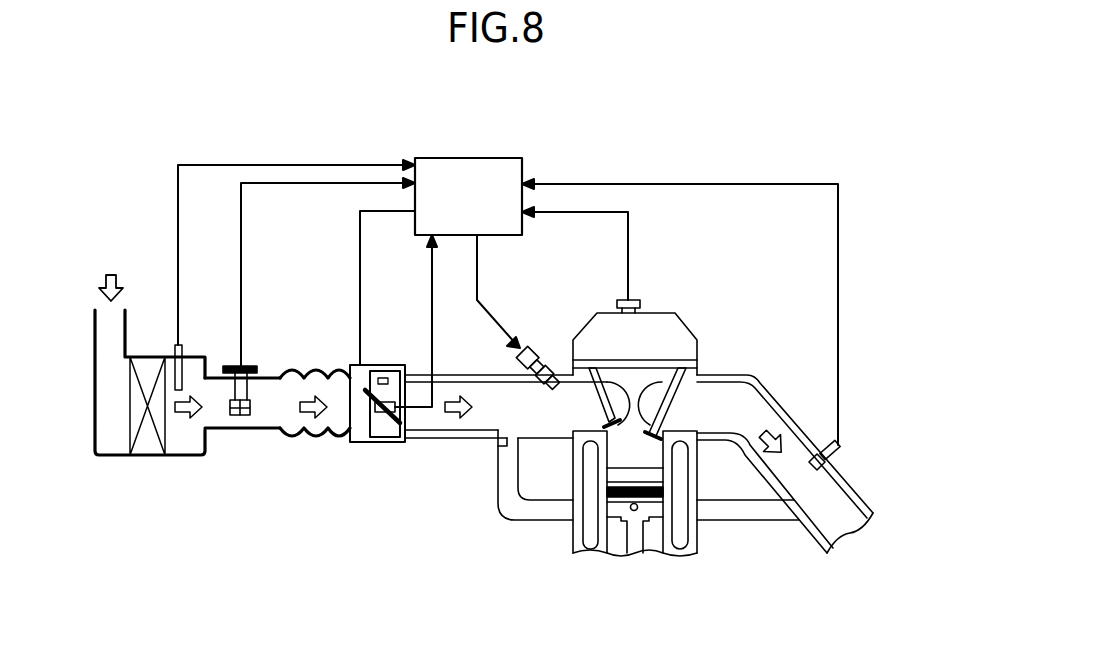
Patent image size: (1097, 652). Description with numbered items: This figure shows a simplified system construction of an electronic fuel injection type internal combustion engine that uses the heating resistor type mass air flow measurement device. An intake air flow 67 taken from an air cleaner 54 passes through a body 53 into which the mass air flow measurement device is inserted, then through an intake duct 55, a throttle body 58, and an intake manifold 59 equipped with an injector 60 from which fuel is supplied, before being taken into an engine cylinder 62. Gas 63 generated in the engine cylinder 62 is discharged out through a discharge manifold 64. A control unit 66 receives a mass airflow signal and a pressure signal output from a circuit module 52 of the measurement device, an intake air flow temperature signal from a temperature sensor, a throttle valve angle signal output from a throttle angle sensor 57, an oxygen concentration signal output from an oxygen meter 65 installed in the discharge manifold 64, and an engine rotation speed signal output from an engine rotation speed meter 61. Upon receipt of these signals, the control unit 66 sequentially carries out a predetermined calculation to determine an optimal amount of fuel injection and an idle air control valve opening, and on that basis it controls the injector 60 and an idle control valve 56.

The circuit module 52 is at (250, 365).
The body 53 is at (237, 430).
The air cleaner 54 is at (118, 456).
The intake duct 55 is at (305, 441).
The idle control valve 56 is at (383, 365).
The throttle angle sensor 57 is at (374, 428).
The throttle body 58 is at (396, 443).
The intake manifold 59 is at (455, 438).
The injector 60 is at (540, 355).
The engine rotation speed meter 61 is at (635, 300).
The engine cylinder 62 is at (618, 548).
The gas 63 is at (770, 430).
The discharge manifold 64 is at (722, 375).
The oxygen meter 65 is at (845, 451).
The control unit 66 is at (470, 158).
The intake air flow 67 is at (110, 273).